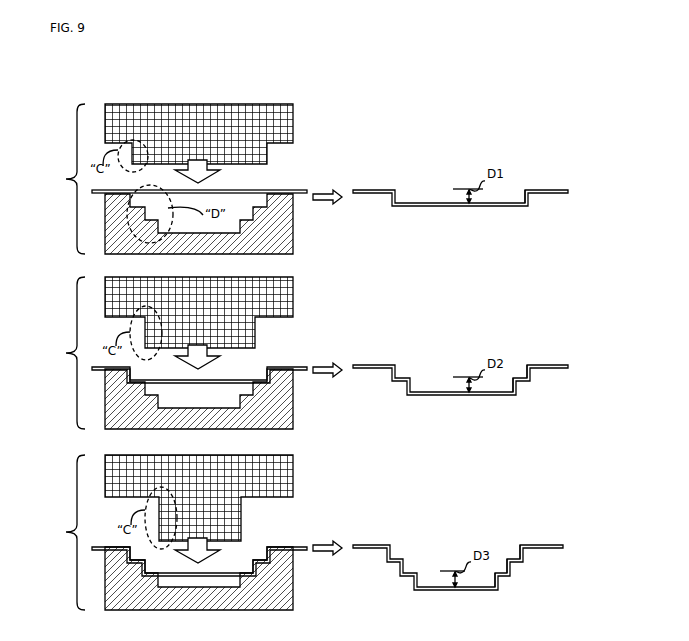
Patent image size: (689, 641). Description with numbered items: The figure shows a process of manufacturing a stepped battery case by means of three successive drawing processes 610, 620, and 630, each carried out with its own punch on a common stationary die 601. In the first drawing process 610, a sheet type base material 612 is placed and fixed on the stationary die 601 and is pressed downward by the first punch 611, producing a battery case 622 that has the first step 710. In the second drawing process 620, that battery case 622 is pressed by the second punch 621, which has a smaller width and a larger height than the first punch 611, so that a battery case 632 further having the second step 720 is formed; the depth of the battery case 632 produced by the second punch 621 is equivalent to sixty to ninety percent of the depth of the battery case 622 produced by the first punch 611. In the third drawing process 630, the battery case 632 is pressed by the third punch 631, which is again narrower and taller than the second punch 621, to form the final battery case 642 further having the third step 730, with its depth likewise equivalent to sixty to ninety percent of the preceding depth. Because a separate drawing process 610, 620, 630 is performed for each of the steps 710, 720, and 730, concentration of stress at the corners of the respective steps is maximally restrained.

The first drawing process 610 is at (60, 179).
The first punch 611 is at (289, 130).
The sheet type base material 612 is at (274, 191).
The stationary die 601 is at (289, 243).
The battery case having the first step 622 is at (425, 195).
The first step 710 is at (528, 201).
The second drawing process 620 is at (60, 353).
The second punch 621 is at (289, 303).
The battery case having the second step 632 is at (425, 368).
The second step 720 is at (515, 393).
The third drawing process 630 is at (60, 532).
The third punch 631 is at (289, 481).
The battery case having three steps 642 is at (425, 555).
The third step 730 is at (497, 587).